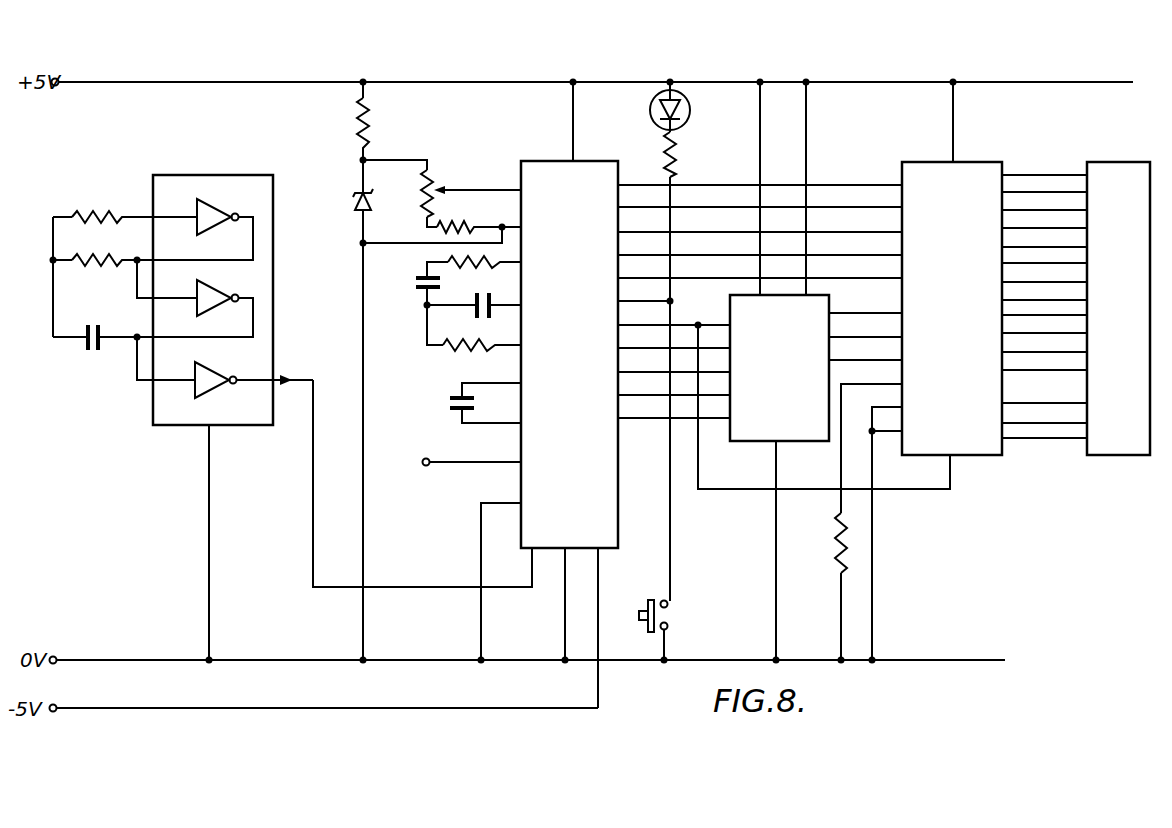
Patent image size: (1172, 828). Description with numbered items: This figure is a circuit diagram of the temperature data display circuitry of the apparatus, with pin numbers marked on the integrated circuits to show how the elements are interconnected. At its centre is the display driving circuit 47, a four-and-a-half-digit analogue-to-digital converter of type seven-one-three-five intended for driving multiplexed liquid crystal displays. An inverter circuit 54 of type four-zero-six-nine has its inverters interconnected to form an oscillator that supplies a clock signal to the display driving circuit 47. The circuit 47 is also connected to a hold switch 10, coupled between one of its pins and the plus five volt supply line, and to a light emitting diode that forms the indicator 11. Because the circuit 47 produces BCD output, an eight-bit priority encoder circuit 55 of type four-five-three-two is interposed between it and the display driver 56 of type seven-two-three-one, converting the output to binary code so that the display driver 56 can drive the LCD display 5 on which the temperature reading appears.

The inverter circuit 54 is at (274, 349).
The display driving circuit 47 is at (548, 161).
The indicator 11 is at (650, 114).
The 8-bit priority encoder circuit 55 is at (728, 311).
The display driver 56 is at (918, 162).
The hold switch 10 is at (648, 601).
The LCD display 5 is at (1125, 300).